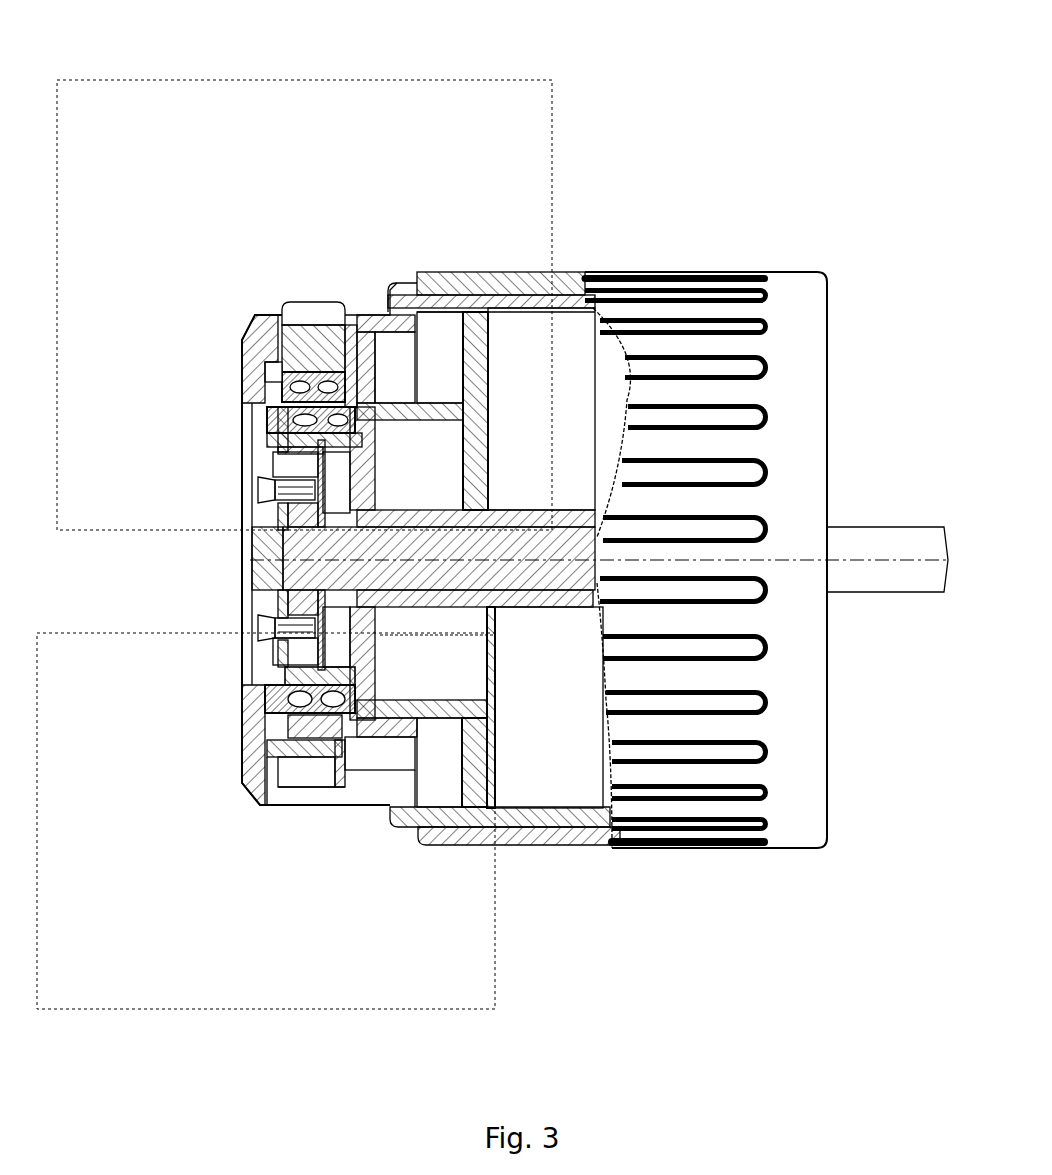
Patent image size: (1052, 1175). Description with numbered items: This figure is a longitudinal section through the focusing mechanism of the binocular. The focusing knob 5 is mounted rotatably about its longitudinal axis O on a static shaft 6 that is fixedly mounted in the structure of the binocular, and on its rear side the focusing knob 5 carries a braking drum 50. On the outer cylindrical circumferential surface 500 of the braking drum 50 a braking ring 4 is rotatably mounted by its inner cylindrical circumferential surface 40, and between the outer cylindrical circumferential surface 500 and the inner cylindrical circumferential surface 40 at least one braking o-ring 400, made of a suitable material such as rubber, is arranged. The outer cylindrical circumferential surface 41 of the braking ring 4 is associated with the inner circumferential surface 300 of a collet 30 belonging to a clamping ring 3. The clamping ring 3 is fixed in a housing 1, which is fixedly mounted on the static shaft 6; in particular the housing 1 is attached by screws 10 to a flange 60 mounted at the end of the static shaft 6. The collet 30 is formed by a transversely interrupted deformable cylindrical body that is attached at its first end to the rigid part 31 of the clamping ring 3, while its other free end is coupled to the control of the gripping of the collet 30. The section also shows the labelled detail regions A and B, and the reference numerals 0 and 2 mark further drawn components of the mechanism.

The support wall 0 is at (248, 565).
The housing 1 is at (243, 432).
The cover cap 2 is at (308, 312).
The clamping ring 3 is at (240, 672).
The braking ring 4 is at (268, 398).
The focusing knob 5 is at (790, 447).
The static shaft 6 is at (530, 563).
The screws 10 is at (258, 492).
The collet 30 is at (302, 787).
The rigid part 31 is at (290, 730).
The inner cylindrical circumferential surface 40 is at (353, 676).
The outer cylindrical circumferential surface 41 is at (331, 402).
The braking drum 50 is at (487, 403).
The flange 60 is at (243, 633).
The inner circumferential surface 300 is at (296, 705).
The braking o-ring 400 is at (385, 400).
The outer cylindrical circumferential surface 500 is at (292, 436).
The region A is at (422, 975).
The region B is at (460, 113).